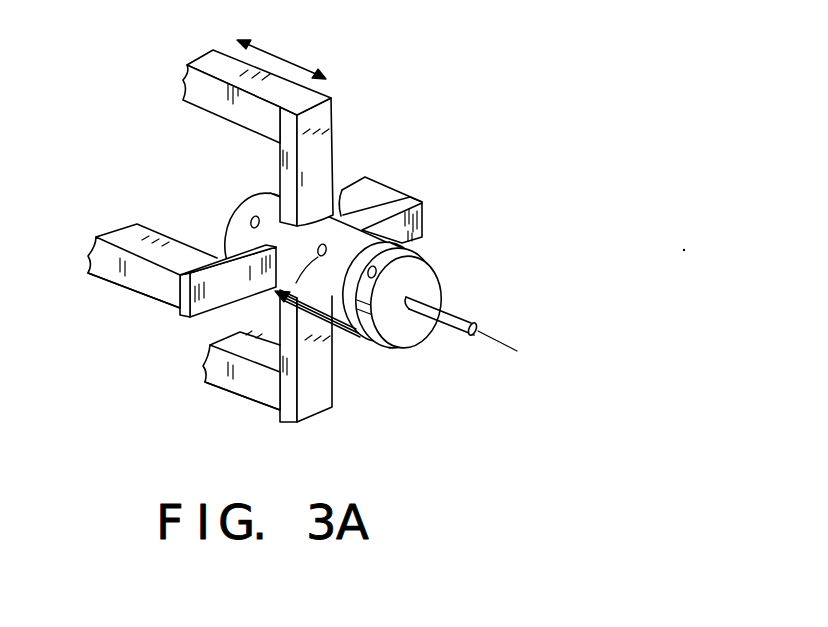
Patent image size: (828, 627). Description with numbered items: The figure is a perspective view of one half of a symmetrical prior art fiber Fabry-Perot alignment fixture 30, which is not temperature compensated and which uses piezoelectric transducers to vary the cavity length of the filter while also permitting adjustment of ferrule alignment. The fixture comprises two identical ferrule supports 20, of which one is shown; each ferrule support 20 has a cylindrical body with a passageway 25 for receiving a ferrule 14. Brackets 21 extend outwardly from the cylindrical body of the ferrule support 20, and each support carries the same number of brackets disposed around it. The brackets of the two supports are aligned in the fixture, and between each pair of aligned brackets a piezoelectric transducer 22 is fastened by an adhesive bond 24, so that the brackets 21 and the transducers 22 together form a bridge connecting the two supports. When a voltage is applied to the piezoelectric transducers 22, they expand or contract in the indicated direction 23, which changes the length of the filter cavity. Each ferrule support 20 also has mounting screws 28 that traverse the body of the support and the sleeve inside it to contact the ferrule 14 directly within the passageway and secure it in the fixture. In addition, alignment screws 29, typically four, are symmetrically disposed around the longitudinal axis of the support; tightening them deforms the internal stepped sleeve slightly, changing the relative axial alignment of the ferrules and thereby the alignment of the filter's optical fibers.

The ferrule 14 is at (466, 315).
The ferrule support 20 is at (338, 286).
The bracket 21 is at (330, 152).
The piezoelectric transducer 22 is at (200, 54).
The direction of expansion or contraction 23 is at (281, 45).
The adhesive bond 24 is at (133, 293).
The passageway 25 is at (400, 332).
The mounting screw 28 is at (252, 216).
The alignment screw 29 is at (301, 297).
The alignment fixture 30 is at (500, 32).